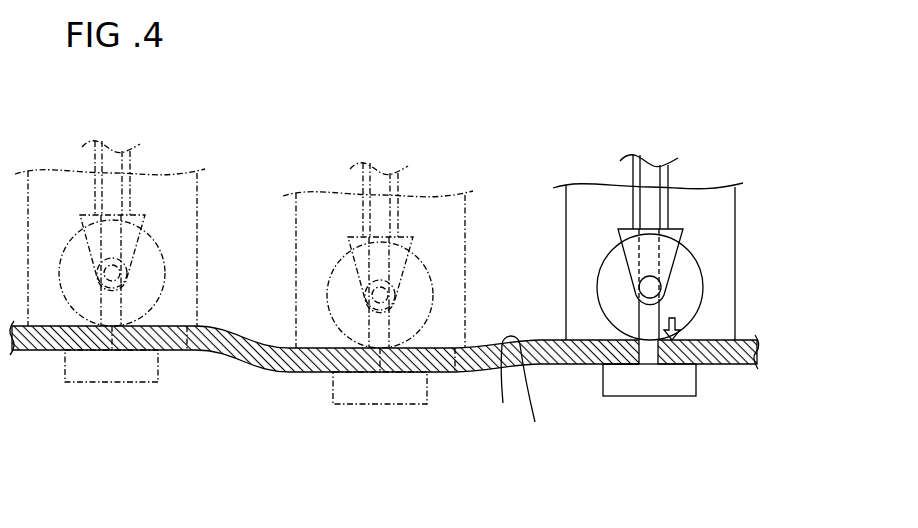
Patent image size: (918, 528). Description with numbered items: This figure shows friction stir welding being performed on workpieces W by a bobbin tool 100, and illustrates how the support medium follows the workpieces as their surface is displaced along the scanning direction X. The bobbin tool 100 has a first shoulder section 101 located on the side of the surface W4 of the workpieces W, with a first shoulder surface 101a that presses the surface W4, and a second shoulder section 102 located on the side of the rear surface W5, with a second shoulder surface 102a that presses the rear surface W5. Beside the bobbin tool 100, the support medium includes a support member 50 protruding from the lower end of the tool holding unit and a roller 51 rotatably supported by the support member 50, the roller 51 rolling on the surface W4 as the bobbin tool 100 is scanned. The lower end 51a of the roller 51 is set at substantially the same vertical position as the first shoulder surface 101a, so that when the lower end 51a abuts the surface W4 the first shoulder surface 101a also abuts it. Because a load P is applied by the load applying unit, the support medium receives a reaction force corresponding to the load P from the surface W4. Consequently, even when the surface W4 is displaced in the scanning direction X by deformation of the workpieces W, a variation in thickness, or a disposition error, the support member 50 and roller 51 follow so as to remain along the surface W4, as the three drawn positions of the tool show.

The support member 50 is at (389, 203).
The roller 51 is at (388, 242).
The lower end of the roller 51a is at (379, 364).
The bobbin tool 100 is at (397, 160).
The first shoulder section 101 is at (408, 259).
The first shoulder surface 101a is at (187, 351).
The second shoulder section 102 is at (142, 373).
The second shoulder surface 102a is at (607, 353).
The load P is at (678, 331).
The workpieces W is at (549, 340).
The surface W4 is at (505, 383).
The rear surface W5 is at (536, 396).
The scanning direction X is at (416, 78).